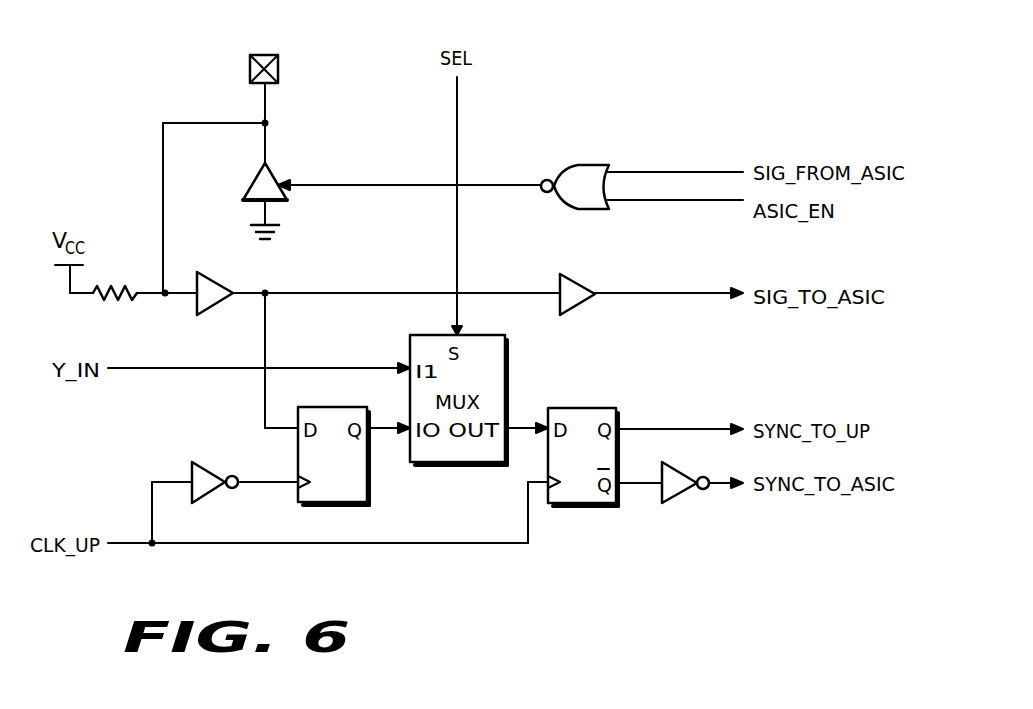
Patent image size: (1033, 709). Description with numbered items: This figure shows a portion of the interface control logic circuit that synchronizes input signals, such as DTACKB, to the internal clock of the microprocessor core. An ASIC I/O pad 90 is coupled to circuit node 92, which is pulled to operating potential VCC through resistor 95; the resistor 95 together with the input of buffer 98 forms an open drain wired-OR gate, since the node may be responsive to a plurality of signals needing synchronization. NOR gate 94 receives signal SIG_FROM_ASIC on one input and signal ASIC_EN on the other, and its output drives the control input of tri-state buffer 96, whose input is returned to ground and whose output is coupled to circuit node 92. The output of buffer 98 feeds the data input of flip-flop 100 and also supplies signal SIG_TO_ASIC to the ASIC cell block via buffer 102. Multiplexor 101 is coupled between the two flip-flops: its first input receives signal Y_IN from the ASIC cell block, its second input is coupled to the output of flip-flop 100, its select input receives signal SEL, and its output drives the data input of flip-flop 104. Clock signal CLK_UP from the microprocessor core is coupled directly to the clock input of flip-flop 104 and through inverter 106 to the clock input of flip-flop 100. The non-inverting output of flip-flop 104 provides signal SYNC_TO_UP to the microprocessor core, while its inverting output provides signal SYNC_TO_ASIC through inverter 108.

The ASIC I/O pad 90 is at (250, 65).
The circuit node 92 is at (269, 125).
The NOR gate 94 is at (569, 165).
The resistor 95 is at (117, 306).
The tri-state buffer 96 is at (255, 184).
The buffer 98 is at (216, 310).
The flip-flop 100 is at (372, 486).
The multiplexor 101 is at (510, 366).
The buffer 102 is at (578, 279).
The flip-flop 104 is at (594, 508).
The inverter 106 is at (215, 464).
The inverter 108 is at (681, 500).